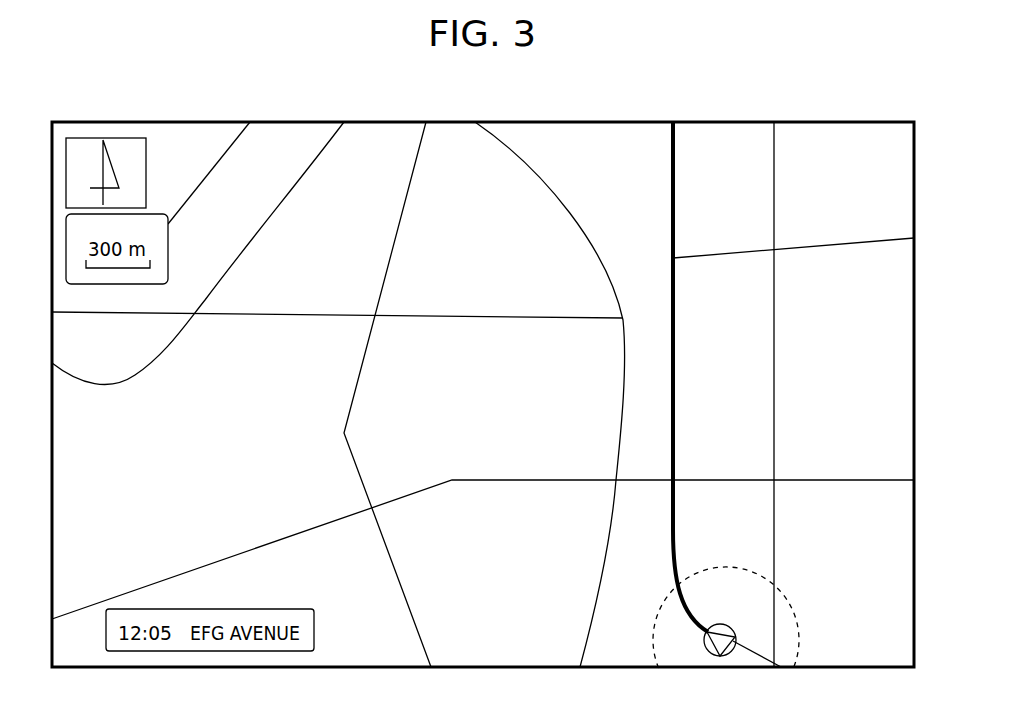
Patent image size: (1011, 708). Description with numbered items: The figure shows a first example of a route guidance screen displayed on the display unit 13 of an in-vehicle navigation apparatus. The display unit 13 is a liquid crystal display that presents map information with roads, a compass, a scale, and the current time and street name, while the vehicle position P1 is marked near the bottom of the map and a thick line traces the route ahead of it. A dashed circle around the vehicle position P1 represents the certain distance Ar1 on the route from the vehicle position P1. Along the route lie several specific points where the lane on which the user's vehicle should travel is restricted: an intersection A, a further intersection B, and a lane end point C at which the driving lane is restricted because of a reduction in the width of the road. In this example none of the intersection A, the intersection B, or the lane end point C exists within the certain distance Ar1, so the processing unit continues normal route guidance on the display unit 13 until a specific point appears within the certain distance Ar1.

The display unit 13 is at (914, 283).
The lane end point C is at (675, 163).
The intersection B is at (671, 258).
The intersection A is at (675, 471).
The certain distance Ar1 is at (783, 598).
The vehicle position P1 is at (713, 650).